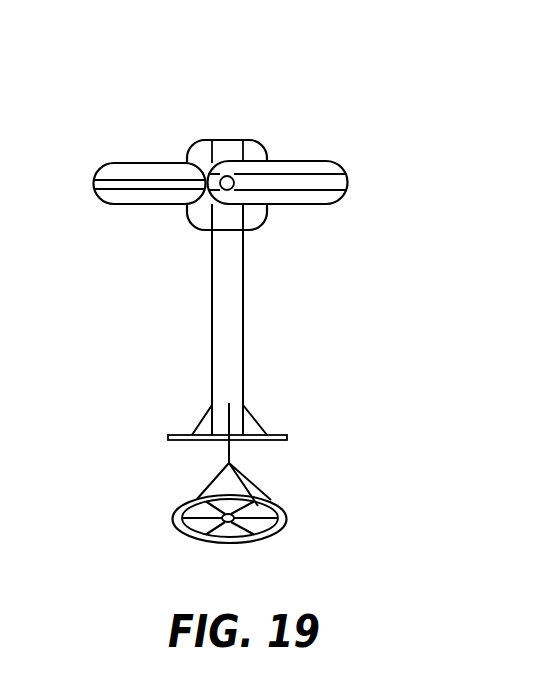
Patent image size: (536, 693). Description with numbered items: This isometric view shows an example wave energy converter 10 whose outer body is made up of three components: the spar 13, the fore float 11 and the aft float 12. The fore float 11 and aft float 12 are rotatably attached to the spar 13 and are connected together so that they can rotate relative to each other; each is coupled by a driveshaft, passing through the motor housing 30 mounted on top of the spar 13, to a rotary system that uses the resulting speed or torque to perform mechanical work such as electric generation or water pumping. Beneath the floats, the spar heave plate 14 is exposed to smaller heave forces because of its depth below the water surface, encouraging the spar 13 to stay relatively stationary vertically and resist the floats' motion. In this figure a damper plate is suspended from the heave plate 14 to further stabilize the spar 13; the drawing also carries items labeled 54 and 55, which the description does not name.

The wave energy converter 10 is at (225, 112).
The fore float 11 is at (118, 163).
The aft float 12 is at (311, 206).
The spar 13 is at (232, 328).
The spar heave plate 14 is at (277, 435).
The motor housing 30 is at (229, 139).
The wheel-shaped pad holder 54 is at (287, 513).
The pivot rod 55 is at (231, 455).